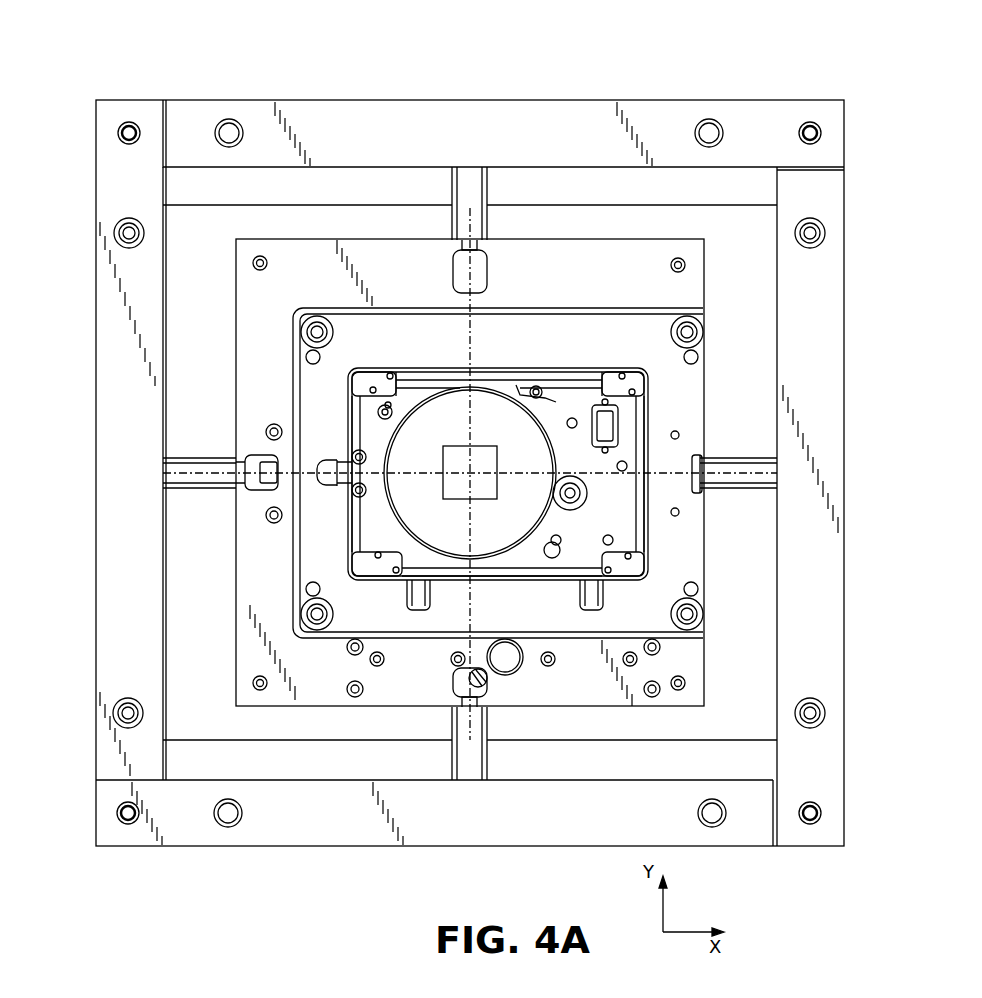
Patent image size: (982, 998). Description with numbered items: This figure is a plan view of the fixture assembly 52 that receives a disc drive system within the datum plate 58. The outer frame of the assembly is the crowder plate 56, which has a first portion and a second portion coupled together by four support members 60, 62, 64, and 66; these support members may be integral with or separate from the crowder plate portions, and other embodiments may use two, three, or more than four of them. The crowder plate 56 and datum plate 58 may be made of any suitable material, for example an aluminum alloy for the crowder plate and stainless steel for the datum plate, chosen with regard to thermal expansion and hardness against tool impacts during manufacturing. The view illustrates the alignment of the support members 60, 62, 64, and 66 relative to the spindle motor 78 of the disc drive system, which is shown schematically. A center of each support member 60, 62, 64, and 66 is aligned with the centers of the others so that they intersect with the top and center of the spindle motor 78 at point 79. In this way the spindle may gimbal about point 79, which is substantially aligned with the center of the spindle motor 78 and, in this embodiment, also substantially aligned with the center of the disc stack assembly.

The fixture assembly 52 is at (698, 64).
The crowder plate 56 is at (335, 113).
The datum plate 58 is at (678, 393).
The support member 60 is at (468, 768).
The support member 62 is at (757, 473).
The support member 64 is at (467, 180).
The support member 66 is at (180, 471).
The spindle motor 78 is at (453, 463).
The center point 79 is at (472, 473).